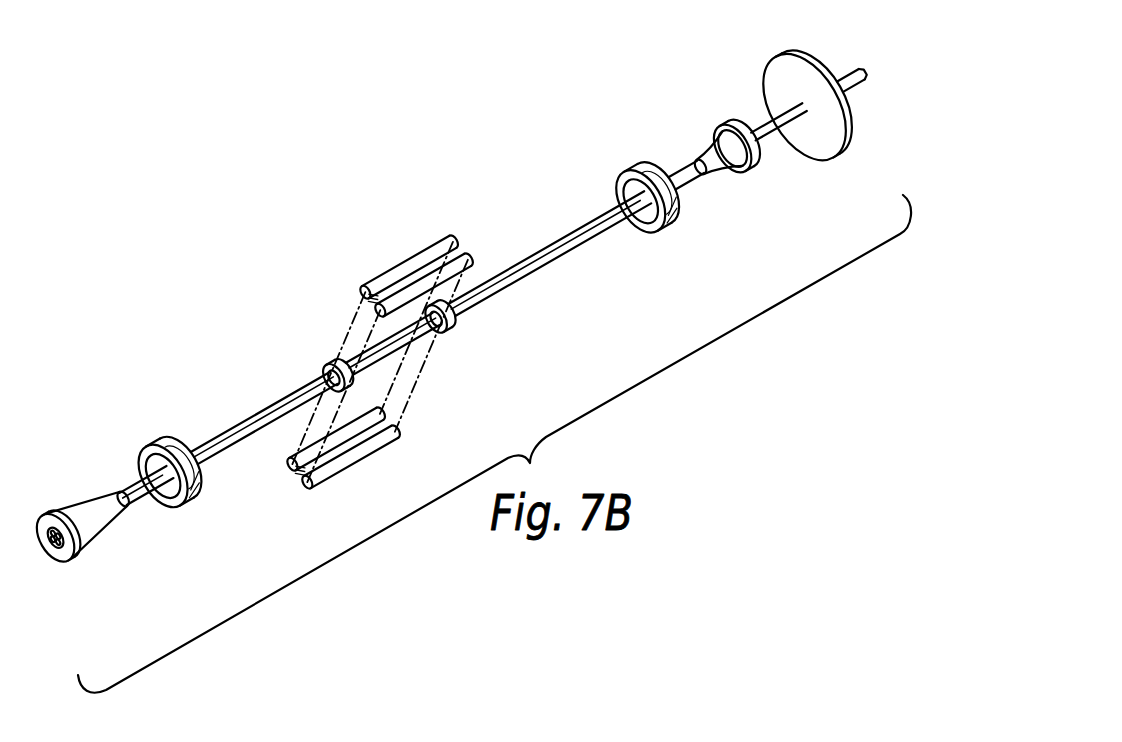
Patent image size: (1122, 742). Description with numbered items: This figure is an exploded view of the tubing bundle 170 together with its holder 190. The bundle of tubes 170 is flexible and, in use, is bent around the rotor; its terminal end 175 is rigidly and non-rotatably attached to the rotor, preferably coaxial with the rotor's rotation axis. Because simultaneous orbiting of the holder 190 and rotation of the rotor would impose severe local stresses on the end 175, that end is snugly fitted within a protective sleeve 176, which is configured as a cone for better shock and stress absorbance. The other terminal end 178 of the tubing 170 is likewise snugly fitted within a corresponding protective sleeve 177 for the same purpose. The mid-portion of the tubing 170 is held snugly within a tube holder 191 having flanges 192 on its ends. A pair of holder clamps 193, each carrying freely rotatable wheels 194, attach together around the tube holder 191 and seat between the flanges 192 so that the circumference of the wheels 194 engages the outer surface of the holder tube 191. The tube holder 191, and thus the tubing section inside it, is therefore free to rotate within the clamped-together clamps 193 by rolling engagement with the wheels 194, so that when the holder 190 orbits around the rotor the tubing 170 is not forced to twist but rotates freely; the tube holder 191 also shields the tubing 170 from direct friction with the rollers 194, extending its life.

The bundle of tubes 170 is at (572, 227).
The terminal end 175 is at (103, 542).
The protective sleeve 176 is at (86, 506).
The distal funnel and collar 177 is at (712, 150).
The other terminal end 178 is at (735, 193).
The holder 190 is at (515, 317).
The tube holder 191 is at (410, 343).
The flanges 192 is at (330, 362).
The holder clamps 193 is at (414, 263).
The freely rotatable wheels 194 is at (455, 237).